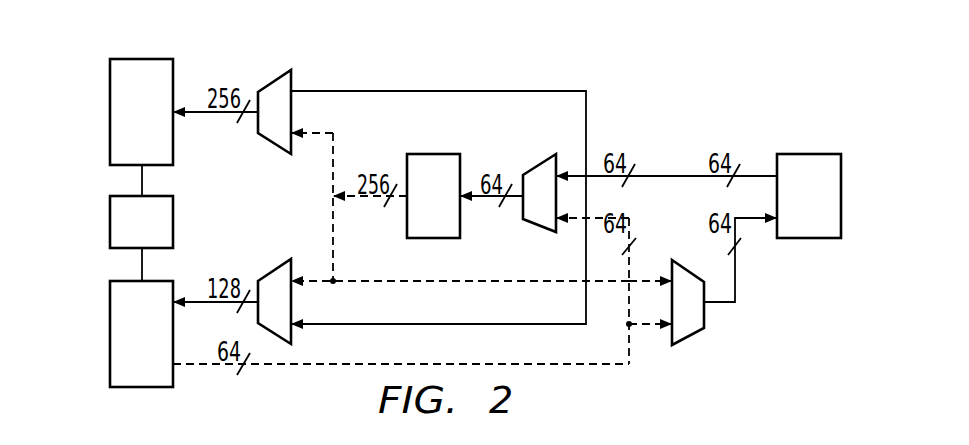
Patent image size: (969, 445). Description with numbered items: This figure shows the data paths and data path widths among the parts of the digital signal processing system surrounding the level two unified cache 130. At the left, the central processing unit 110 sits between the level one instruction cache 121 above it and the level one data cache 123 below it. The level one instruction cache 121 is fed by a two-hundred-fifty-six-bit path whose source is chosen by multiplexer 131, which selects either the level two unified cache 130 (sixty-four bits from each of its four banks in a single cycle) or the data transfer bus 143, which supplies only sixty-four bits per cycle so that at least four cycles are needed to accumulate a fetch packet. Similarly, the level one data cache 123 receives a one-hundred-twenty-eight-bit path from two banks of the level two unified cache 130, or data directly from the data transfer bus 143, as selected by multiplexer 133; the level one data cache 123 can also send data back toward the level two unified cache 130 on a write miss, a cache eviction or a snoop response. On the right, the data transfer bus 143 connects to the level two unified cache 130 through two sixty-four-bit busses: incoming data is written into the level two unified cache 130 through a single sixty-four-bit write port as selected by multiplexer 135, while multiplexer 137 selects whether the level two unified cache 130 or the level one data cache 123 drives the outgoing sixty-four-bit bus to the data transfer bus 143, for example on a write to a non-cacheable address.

The central processing unit 110 is at (110, 222).
The level one instruction cache 121 is at (110, 112).
The level one data cache 123 is at (110, 333).
The level two unified cache 130 is at (433, 154).
The multiplexer 131 is at (276, 80).
The multiplexer 133 is at (274, 267).
The multiplexer 135 is at (539, 163).
The multiplexer 137 is at (686, 337).
The data transfer bus 143 is at (808, 154).